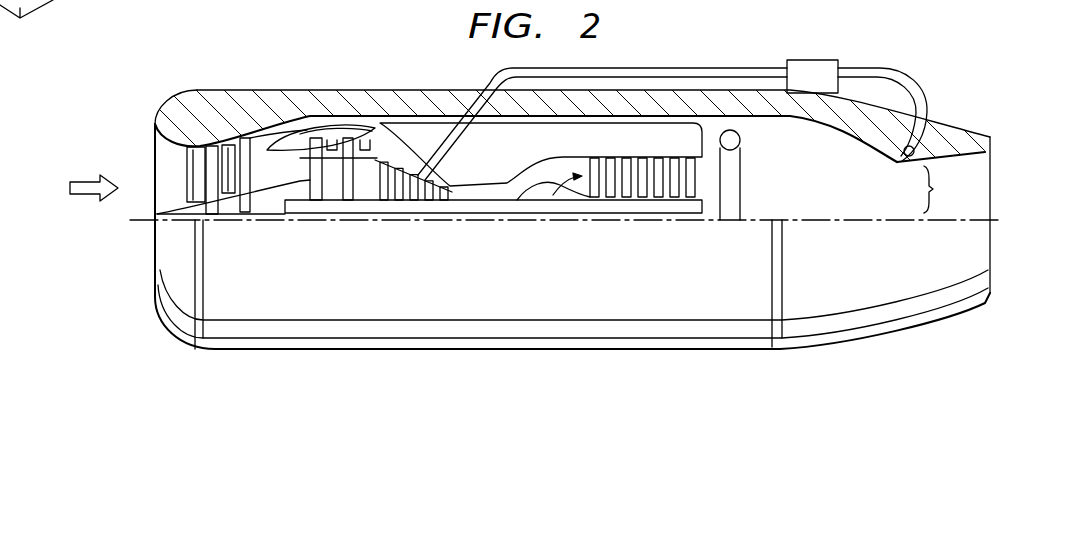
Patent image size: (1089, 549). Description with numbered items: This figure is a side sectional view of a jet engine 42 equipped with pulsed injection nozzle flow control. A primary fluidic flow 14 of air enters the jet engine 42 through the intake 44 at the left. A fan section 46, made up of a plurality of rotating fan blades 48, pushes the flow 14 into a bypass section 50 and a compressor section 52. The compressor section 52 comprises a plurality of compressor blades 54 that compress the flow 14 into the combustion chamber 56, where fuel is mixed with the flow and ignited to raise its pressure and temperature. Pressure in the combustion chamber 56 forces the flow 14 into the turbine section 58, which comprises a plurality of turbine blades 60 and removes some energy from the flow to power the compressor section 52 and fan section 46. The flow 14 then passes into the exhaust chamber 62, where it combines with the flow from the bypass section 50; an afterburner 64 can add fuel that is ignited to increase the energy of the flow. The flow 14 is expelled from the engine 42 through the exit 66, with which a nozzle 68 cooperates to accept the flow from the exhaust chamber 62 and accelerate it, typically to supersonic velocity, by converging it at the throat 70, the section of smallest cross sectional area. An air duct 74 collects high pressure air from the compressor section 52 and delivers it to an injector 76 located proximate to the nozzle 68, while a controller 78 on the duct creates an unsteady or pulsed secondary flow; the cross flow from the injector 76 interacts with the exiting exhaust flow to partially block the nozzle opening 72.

The primary fluidic flow 14 is at (79, 178).
The jet engine 42 is at (263, 80).
The intake 44 is at (139, 205).
The fan section 46 is at (178, 153).
The fan blades 48 is at (247, 205).
The bypass section 50 is at (337, 122).
The compressor section 52 is at (296, 178).
The compressor blades 54 is at (457, 192).
The combustion chamber 56 is at (498, 200).
The turbine section 58 is at (552, 190).
The turbine blades 60 is at (594, 190).
The exhaust chamber 62 is at (822, 172).
The afterburner 64 is at (743, 184).
The exit 66 is at (1003, 204).
The nozzle 68 is at (956, 120).
The throat 70 is at (964, 167).
The nozzle opening 72 is at (941, 189).
The air duct 74 is at (654, 67).
The injector 76 is at (898, 162).
The controller 78 is at (813, 60).